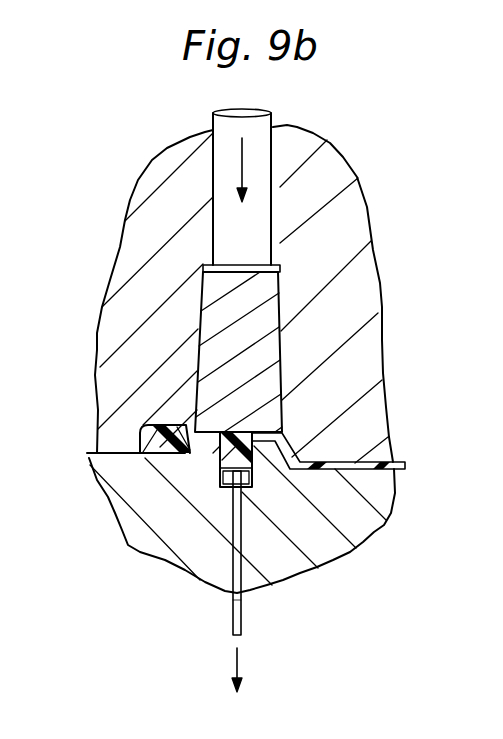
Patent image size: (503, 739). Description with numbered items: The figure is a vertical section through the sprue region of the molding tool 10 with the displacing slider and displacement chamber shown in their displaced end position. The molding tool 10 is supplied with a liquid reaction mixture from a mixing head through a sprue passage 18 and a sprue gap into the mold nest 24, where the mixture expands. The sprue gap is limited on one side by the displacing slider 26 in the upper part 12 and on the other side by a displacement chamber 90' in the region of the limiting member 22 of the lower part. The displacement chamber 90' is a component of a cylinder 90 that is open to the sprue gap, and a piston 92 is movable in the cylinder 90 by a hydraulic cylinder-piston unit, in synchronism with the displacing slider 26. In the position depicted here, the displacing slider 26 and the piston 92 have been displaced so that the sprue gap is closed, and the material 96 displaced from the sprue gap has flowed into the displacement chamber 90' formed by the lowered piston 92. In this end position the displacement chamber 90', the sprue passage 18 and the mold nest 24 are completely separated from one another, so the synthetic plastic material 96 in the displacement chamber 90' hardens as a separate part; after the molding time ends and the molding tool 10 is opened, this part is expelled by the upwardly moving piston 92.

The molding tool 10 is at (118, 492).
The upper part 12 is at (302, 148).
The sprue passage 18 is at (143, 455).
The limiting member 22 is at (185, 425).
The mold nest 24 is at (378, 470).
The displacing slider 26 is at (250, 348).
The cylinder 90 is at (207, 581).
The displacement chamber 90' is at (302, 572).
The piston 92 is at (243, 493).
The material 96 is at (220, 466).